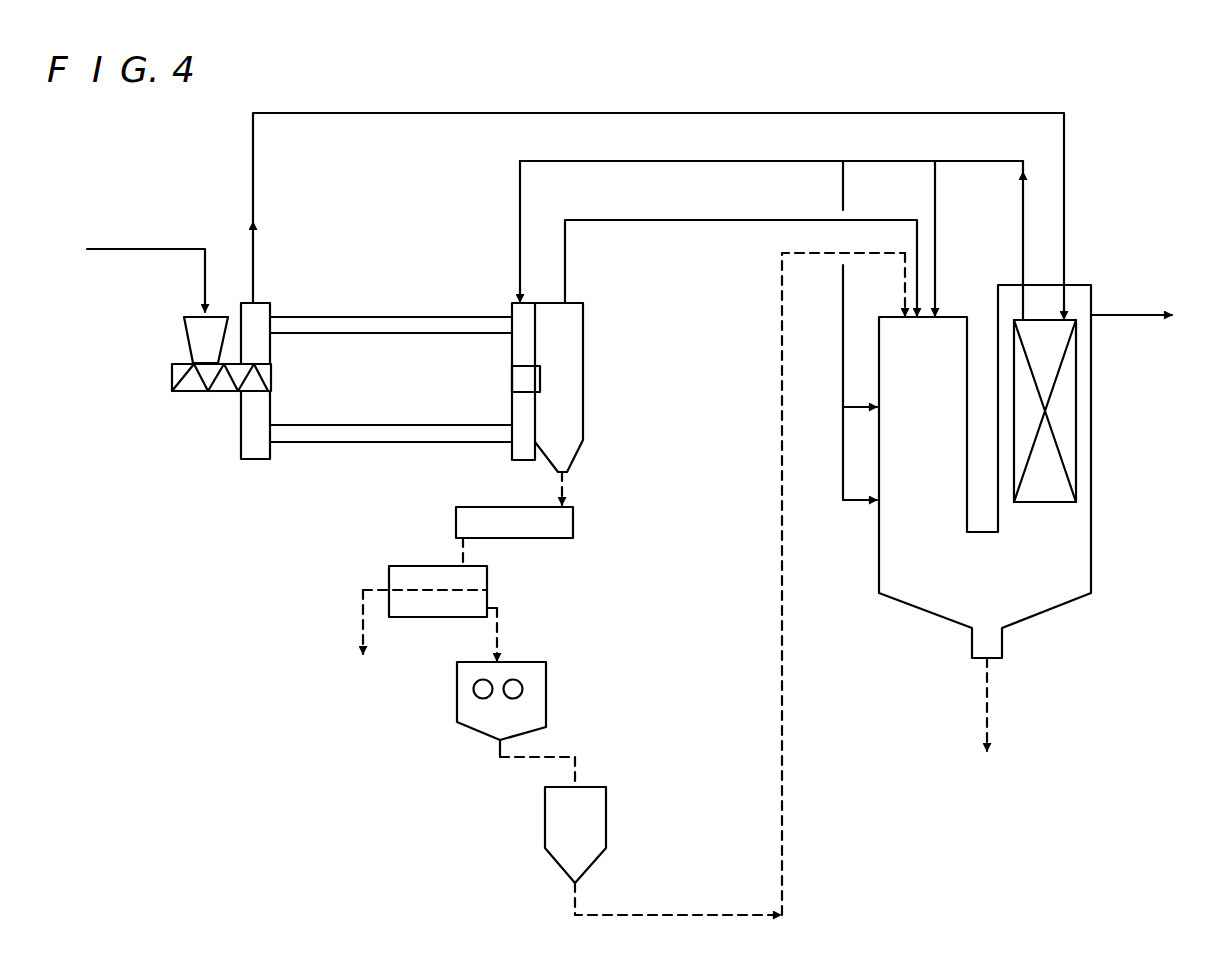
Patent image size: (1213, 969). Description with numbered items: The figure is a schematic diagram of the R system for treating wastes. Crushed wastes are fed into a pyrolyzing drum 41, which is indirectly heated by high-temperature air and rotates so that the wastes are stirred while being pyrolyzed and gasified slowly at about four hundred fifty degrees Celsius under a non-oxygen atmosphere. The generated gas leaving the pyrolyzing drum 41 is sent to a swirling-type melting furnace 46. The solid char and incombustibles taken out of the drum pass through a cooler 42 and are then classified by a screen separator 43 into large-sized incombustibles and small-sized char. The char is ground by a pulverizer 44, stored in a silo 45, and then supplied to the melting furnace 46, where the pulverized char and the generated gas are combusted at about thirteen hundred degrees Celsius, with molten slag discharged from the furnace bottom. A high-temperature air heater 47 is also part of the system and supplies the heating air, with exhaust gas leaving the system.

The pyrolyzing drum 41 is at (355, 318).
The cooler 42 is at (573, 522).
The separator 43 is at (487, 578).
The pulverizer 44 is at (546, 688).
The silo 45 is at (606, 817).
The swirling-type melting furnace 46 is at (879, 566).
The high-temperature air heater 47 is at (1076, 413).